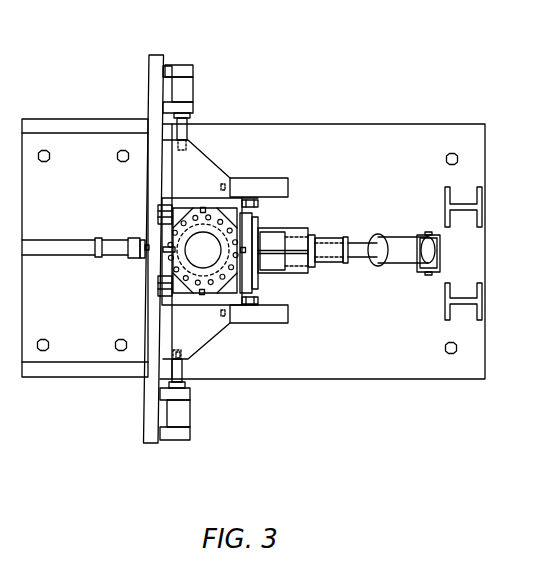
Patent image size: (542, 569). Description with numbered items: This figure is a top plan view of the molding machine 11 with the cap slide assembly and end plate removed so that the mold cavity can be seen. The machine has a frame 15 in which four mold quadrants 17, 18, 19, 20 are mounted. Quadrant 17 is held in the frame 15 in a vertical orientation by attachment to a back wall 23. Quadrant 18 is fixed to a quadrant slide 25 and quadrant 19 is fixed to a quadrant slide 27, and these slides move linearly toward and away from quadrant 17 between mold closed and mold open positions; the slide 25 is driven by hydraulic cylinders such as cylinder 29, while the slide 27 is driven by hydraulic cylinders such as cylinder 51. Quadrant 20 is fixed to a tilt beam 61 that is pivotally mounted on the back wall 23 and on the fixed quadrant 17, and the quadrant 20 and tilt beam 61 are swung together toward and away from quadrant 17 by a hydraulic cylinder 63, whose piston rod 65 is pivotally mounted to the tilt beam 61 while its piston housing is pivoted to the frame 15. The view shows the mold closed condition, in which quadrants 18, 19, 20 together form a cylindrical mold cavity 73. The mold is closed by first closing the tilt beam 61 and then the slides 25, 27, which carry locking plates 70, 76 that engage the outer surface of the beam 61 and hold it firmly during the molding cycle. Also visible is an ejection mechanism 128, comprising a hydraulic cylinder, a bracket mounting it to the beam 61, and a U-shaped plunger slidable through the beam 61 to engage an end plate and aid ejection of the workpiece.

The molding machine 11 is at (299, 86).
The frame 15 is at (88, 206).
The mold quadrant 17 is at (150, 271).
The mold quadrant 18 is at (190, 214).
The mold quadrant 19 is at (193, 284).
The mold quadrant 20 is at (244, 237).
The back wall 23 is at (145, 404).
The quadrant slide 25 is at (210, 167).
The quadrant slide 27 is at (197, 337).
The hydraulic cylinder 29 is at (194, 83).
The hydraulic cylinder 51 is at (191, 407).
The tilt beam 61 is at (289, 271).
The hydraulic cylinder 63 is at (397, 265).
The piston rod 65 is at (360, 254).
The locking plate 70 is at (260, 292).
The cylindrical mold cavity 73 is at (213, 259).
The locking plate 76 is at (260, 209).
The ejection mechanism 128 is at (334, 235).